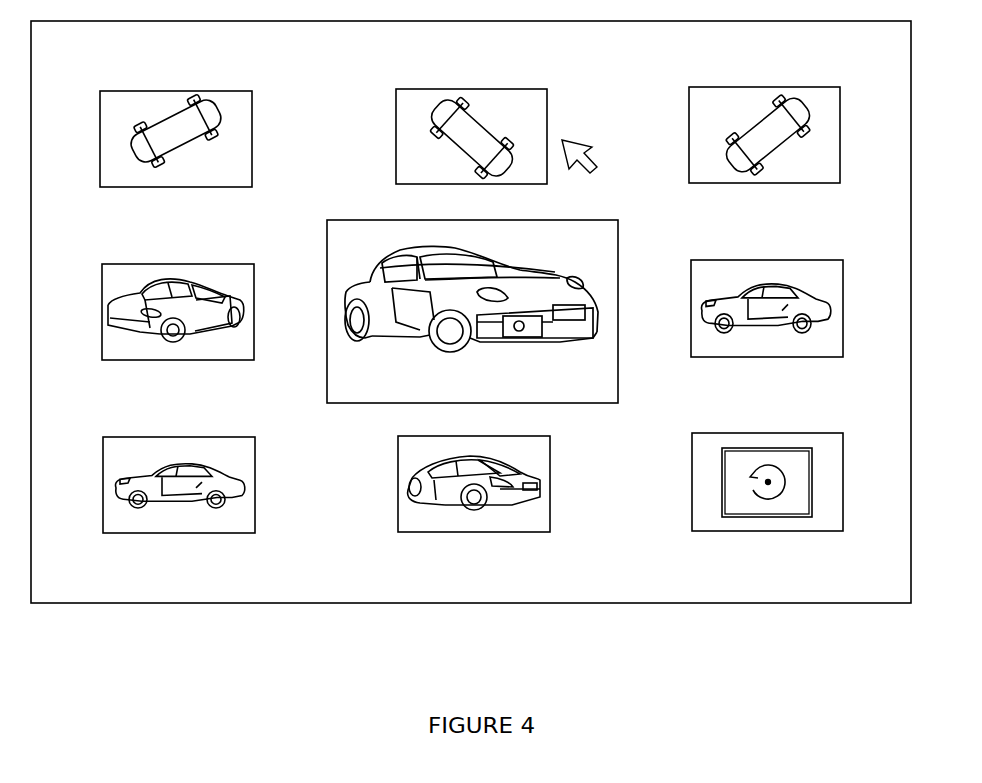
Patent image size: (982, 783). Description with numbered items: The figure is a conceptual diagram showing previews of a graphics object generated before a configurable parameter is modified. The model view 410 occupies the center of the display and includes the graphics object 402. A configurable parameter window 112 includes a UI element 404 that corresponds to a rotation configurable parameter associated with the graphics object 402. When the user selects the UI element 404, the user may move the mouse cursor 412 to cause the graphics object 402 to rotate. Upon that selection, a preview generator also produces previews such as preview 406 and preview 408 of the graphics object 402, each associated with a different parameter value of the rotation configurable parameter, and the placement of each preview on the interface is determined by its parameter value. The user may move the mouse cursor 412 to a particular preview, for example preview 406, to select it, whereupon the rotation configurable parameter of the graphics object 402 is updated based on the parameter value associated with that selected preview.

The configurable parameter window 112 is at (798, 457).
The graphics object 402 is at (537, 342).
The UI element 404 is at (813, 480).
The preview 406 is at (157, 91).
The preview 408 is at (477, 532).
The model view 410 is at (528, 331).
The mouse cursor 412 is at (577, 136).